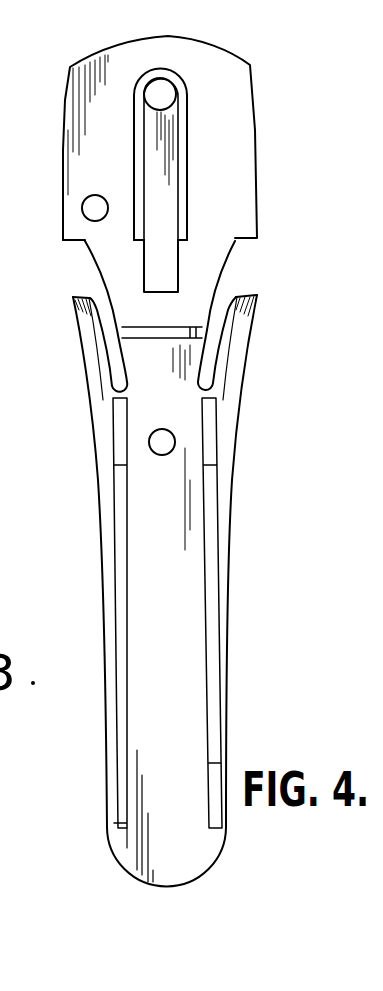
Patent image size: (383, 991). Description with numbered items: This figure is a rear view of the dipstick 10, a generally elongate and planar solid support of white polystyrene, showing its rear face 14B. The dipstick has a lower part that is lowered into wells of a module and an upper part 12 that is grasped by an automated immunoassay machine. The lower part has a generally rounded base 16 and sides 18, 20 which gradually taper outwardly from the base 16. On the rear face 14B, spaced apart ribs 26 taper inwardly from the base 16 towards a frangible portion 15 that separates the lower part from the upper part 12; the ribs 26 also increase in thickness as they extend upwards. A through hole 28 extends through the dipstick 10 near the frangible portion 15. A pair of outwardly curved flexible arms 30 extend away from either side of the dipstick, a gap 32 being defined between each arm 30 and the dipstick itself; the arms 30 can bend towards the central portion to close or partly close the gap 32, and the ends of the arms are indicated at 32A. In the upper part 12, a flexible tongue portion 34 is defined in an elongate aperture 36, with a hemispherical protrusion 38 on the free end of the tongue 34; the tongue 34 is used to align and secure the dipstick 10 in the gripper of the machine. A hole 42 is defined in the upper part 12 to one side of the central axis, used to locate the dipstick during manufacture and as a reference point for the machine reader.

The dipstick 10 is at (273, 123).
The upper part 12 is at (80, 153).
The rear face 14B is at (170, 737).
The frangible portion 15 is at (187, 323).
The base 16 is at (200, 878).
The side 18 is at (105, 760).
The side 20 is at (230, 588).
The ribs 26 is at (210, 625).
The through hole 28 is at (160, 438).
The flexible arms 30 is at (85, 320).
The gap 32 is at (110, 340).
The arm end faces 32A is at (73, 293).
The tongue portion 34 is at (167, 196).
The elongate aperture 36 is at (138, 120).
The hemispherical protrusion 38 is at (158, 96).
The hole 42 is at (82, 209).